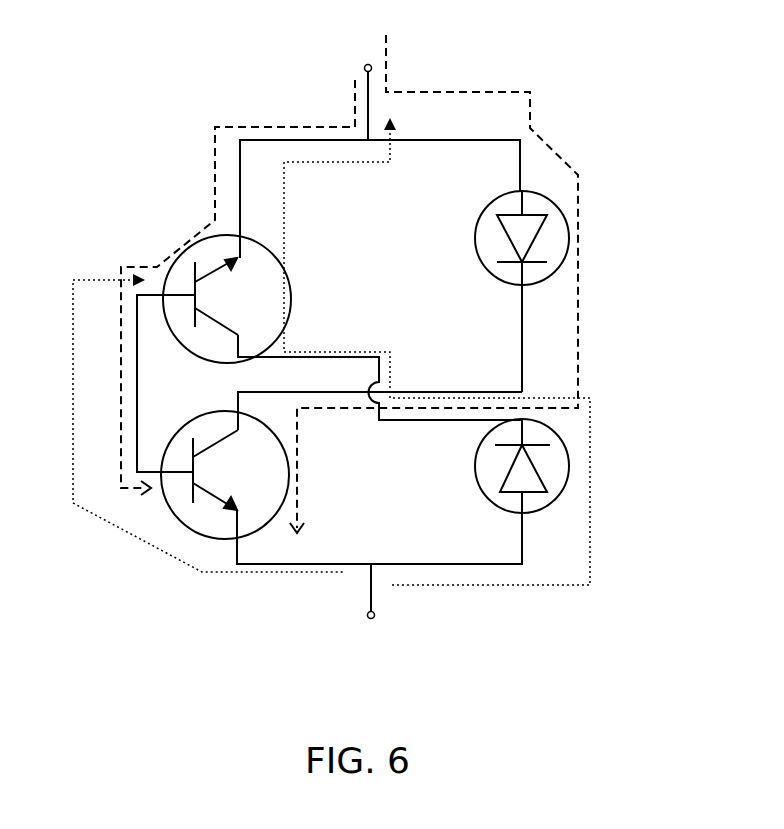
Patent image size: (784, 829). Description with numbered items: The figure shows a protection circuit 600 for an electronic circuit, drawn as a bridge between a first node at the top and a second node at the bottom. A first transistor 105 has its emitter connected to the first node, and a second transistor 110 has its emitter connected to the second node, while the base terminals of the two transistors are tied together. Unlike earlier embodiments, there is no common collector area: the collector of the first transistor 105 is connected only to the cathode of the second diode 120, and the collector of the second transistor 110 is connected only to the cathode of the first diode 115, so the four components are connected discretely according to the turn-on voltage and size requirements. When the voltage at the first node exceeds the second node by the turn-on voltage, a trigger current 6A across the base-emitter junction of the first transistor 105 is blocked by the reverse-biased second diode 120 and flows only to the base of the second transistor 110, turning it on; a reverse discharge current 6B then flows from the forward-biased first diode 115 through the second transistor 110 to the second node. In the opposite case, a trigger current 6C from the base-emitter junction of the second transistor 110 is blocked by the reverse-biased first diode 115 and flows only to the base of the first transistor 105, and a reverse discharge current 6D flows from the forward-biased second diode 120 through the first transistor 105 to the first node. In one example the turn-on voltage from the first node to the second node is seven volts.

The protection circuit 600 is at (681, 137).
The first transistor 105 is at (277, 262).
The second transistor 110 is at (285, 497).
The first diode 115 is at (563, 215).
The second diode 120 is at (568, 442).
The trigger current 6A is at (224, 287).
The reverse discharge current 6B is at (449, 284).
The trigger current 6C is at (196, 423).
The reverse discharge current 6D is at (449, 351).